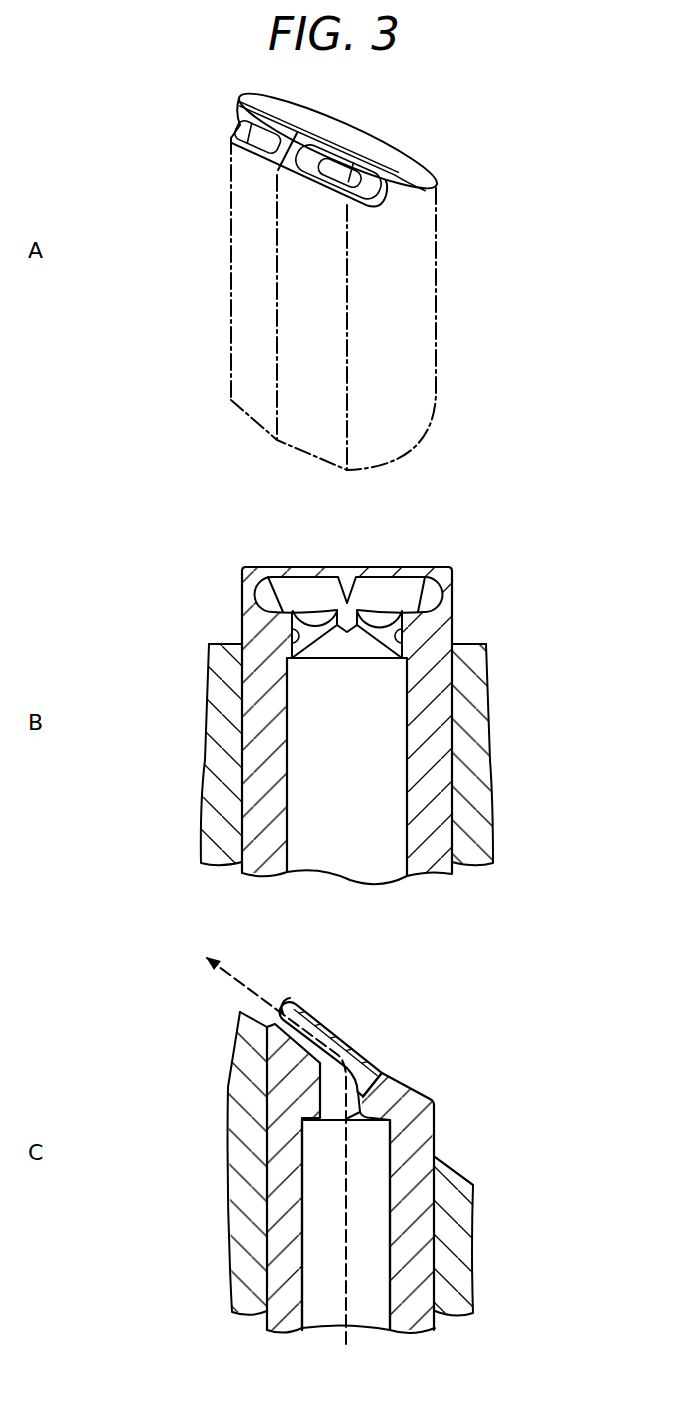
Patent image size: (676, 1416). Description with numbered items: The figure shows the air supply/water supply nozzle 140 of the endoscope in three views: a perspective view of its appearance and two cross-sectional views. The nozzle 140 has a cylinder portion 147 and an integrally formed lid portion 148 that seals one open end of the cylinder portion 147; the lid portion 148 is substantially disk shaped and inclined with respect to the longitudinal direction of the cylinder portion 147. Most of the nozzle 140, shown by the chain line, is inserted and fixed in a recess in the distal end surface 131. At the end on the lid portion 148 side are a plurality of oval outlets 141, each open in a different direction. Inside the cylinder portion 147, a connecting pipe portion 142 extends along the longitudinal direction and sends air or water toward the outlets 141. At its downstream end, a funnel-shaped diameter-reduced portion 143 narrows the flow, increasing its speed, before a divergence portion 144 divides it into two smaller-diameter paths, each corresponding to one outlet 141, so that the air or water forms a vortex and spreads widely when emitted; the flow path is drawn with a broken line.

The distal end surface 131 is at (470, 643).
The air supply/water supply nozzle 140 is at (345, 706).
The outlet 141 is at (318, 166).
The connecting pipe portion 142 is at (410, 721).
The diameter-reduced portion 143 is at (287, 657).
The divergence portion 144 is at (287, 645).
The cylinder portion 147 is at (410, 308).
The lid portion 148 is at (345, 140).